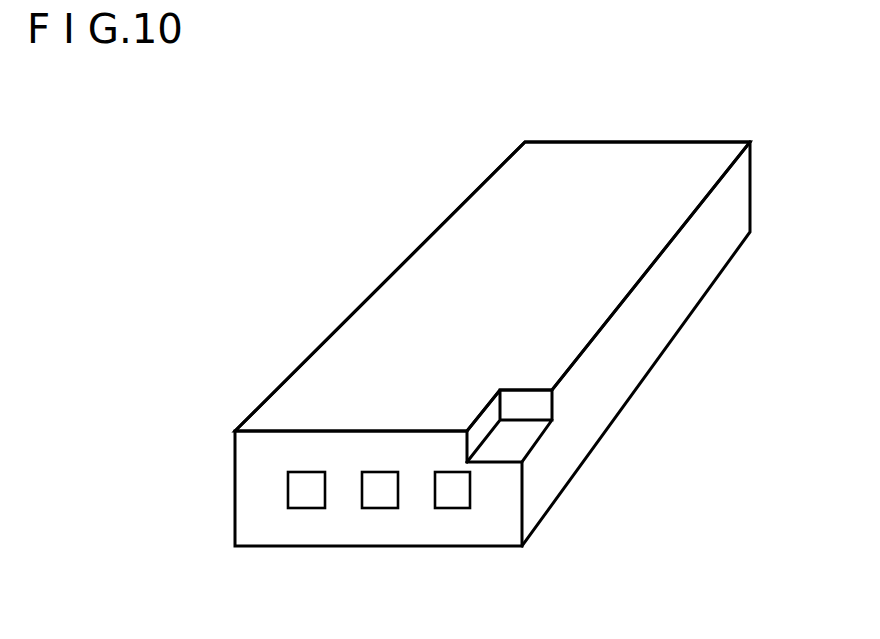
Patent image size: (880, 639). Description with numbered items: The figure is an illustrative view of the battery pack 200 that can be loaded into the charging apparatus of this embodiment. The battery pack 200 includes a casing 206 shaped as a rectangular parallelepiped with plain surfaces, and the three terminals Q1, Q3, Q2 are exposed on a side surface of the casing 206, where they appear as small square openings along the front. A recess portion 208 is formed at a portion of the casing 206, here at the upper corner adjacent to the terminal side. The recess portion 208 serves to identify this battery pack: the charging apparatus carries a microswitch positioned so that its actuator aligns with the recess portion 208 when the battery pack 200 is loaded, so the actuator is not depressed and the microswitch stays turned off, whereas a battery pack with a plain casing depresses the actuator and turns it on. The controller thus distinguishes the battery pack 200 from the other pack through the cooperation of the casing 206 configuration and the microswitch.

The battery pack 200 is at (492, 318).
The casing 206 is at (577, 160).
The recess portion 208 is at (518, 416).
The terminal Q1 is at (307, 498).
The terminal Q3 is at (383, 498).
The terminal Q2 is at (459, 498).